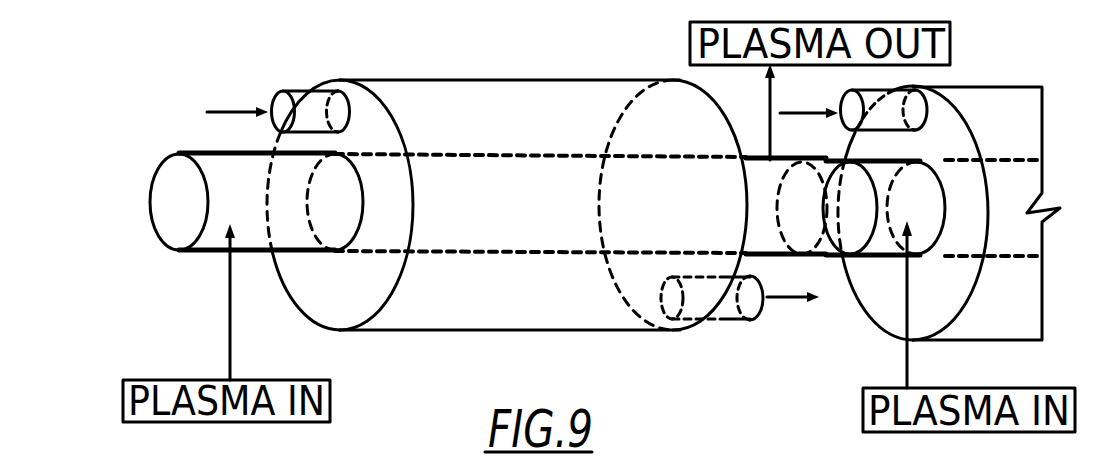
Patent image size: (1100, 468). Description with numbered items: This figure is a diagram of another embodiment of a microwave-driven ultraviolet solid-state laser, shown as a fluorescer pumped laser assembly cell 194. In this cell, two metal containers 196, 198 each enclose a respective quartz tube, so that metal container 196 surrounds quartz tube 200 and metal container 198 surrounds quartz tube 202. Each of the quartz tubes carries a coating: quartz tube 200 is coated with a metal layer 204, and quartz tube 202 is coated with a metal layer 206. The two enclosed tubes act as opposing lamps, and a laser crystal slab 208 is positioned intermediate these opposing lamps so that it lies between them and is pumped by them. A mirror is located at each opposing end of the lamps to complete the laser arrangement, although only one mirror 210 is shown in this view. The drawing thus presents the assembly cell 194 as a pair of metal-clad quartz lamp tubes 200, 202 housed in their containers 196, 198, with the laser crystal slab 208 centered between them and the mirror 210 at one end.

The fluorescer pumped laser assembly cell 194 is at (596, 72).
The metal container 196 is at (410, 80).
The metal container 198 is at (1020, 87).
The quartz tube 200 is at (201, 165).
The quartz tube 202 is at (868, 248).
The metal layer 204 is at (200, 253).
The metal layer 206 is at (900, 258).
The laser crystal slab 208 is at (805, 157).
The mirror 210 is at (163, 172).